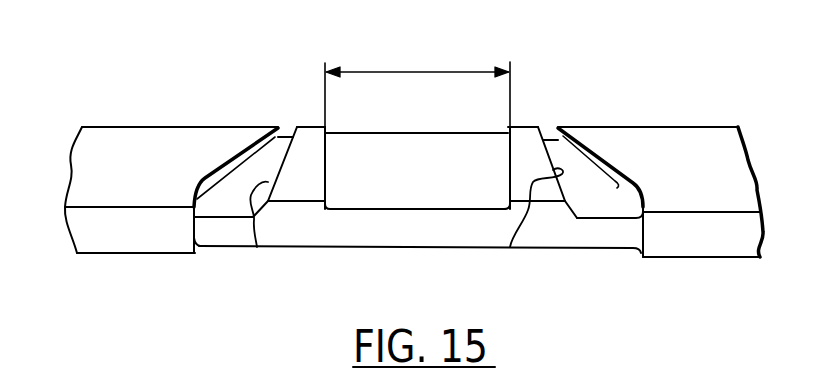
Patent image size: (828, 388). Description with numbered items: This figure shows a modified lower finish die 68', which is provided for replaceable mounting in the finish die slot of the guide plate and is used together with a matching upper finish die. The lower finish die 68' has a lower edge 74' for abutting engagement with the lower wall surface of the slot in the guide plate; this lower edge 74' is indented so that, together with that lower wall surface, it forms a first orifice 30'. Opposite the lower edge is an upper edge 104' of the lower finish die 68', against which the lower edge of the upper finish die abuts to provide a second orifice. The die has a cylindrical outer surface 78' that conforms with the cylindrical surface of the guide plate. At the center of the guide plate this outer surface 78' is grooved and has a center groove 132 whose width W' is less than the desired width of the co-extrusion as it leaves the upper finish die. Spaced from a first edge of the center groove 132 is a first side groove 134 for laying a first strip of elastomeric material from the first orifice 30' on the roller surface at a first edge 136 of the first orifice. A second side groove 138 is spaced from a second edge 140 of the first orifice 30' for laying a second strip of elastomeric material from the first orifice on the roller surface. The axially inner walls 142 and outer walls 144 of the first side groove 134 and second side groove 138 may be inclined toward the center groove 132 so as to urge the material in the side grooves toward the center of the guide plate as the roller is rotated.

The upper edge 104' is at (171, 159).
The second edge 140 is at (198, 243).
The outer walls 144 is at (233, 166).
The second side groove 138 is at (285, 138).
The inner walls 142 is at (257, 247).
The width W' is at (417, 77).
The center groove 132 is at (398, 152).
The first side groove 134 is at (549, 138).
The first orifice 30' is at (417, 257).
The first edge 136 is at (623, 237).
The cylindrical outer surface 78' is at (648, 120).
The lower finish die 68' is at (740, 169).
The lower edge 74' is at (701, 261).